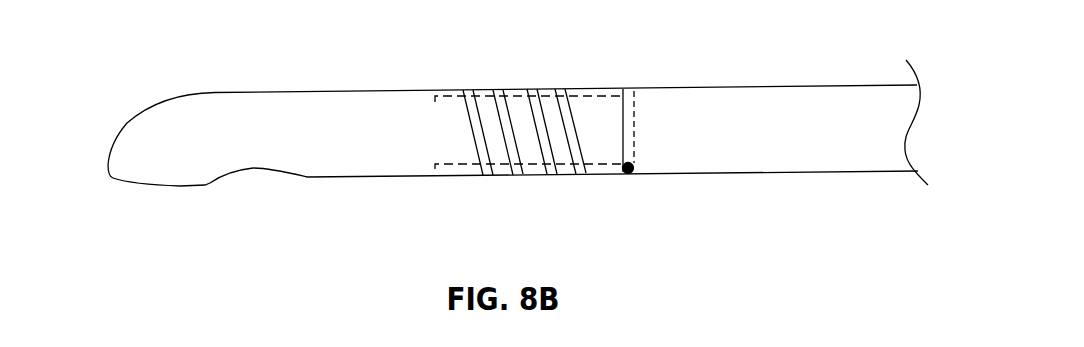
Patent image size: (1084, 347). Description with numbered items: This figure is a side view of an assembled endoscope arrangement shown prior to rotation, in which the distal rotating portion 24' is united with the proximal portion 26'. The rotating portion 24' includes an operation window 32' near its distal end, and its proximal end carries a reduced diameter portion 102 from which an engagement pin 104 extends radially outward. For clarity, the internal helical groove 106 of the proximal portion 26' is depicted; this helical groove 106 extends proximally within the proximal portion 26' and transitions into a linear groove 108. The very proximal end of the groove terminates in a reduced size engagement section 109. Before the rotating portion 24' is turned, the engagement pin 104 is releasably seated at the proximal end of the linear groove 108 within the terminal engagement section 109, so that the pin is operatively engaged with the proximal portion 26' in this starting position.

The rotating portion 24' is at (512, 109).
The proximal portion 26' is at (617, 105).
The operation window 32' is at (258, 198).
The reduced diameter portion 102 is at (539, 102).
The engagement pin 104 is at (719, 176).
The helical groove 106 is at (502, 135).
The linear groove 108 is at (593, 163).
The engagement section 109 is at (645, 205).